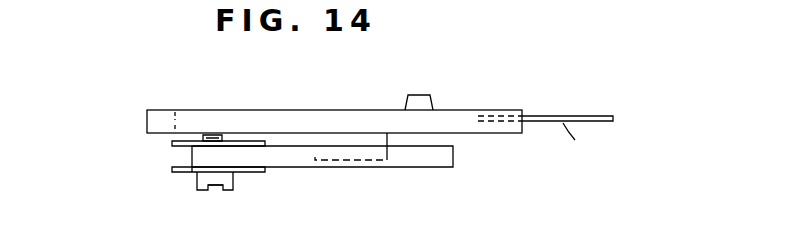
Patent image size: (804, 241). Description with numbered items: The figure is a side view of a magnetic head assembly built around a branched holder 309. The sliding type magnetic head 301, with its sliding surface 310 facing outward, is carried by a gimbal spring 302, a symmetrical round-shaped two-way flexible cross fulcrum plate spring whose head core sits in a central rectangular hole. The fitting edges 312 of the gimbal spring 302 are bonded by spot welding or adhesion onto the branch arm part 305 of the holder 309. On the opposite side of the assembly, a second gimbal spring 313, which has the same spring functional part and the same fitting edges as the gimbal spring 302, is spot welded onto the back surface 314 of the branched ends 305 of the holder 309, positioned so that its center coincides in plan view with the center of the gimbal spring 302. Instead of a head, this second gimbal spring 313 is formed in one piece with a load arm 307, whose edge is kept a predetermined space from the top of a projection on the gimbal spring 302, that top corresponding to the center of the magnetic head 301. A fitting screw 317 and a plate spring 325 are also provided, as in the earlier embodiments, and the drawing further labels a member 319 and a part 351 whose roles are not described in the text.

The sliding type magnetic head 301 is at (205, 180).
The gimbal spring 302 is at (190, 173).
The branch arm part 305 is at (263, 170).
The load arm 307 is at (210, 137).
The branched holder 309 is at (432, 155).
The sliding surface 310 is at (228, 184).
The fitting edge 312 is at (225, 145).
The gimbal spring 313 is at (172, 150).
The back surface 314 is at (200, 137).
The fitting screw 317 is at (420, 95).
The top bar 319 is at (497, 109).
The plate spring 325 is at (577, 117).
The pin end 351 is at (603, 172).